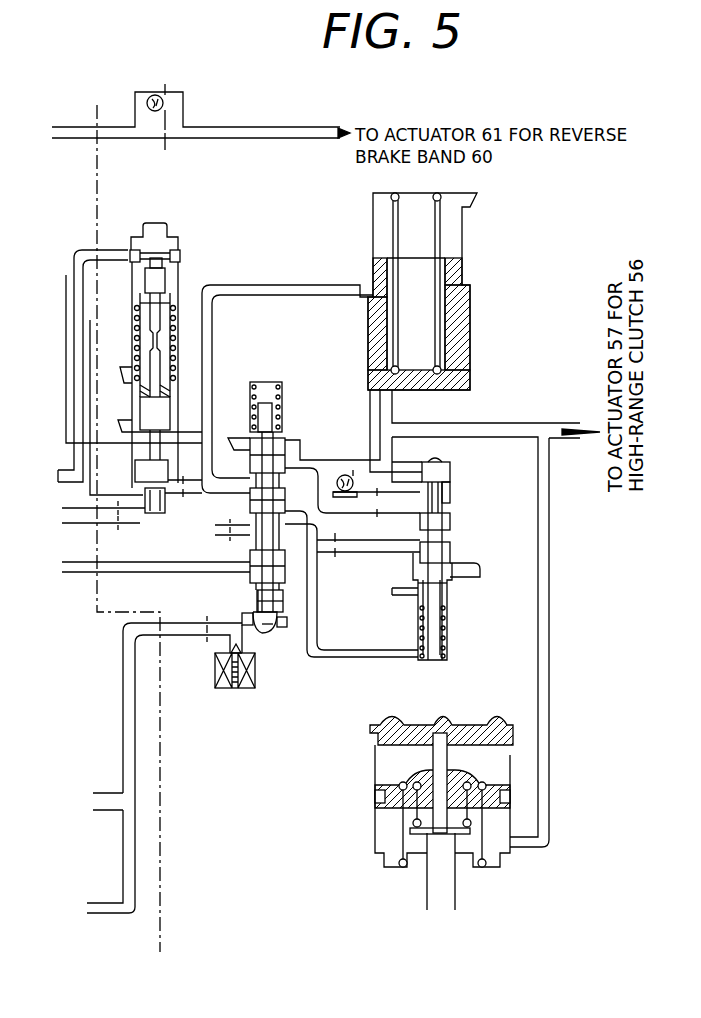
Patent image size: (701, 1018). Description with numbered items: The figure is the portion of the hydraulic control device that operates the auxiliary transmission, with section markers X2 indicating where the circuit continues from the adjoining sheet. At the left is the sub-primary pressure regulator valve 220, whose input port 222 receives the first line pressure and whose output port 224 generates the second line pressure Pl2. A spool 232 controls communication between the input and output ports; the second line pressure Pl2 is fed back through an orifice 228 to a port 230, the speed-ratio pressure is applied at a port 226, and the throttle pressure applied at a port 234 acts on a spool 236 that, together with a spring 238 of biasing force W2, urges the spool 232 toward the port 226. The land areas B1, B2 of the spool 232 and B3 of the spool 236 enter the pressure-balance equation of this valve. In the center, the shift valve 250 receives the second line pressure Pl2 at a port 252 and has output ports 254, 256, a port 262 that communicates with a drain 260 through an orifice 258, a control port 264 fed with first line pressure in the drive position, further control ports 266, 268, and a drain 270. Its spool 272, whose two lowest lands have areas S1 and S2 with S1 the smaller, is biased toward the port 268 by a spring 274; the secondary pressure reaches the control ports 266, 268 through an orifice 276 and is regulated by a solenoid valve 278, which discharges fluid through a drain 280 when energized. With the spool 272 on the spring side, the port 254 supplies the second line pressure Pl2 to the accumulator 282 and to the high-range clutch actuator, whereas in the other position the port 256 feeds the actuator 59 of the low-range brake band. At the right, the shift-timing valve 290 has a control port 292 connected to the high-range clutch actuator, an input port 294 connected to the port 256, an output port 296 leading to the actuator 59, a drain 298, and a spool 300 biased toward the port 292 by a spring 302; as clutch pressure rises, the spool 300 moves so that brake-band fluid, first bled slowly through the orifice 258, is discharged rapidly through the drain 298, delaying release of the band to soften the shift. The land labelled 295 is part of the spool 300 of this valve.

The actuator of the low-range brake band 59 is at (366, 824).
The sub-primary pressure regulator valve 220 is at (188, 248).
The input port 222 is at (135, 465).
The output port 224 is at (140, 442).
The port 226 is at (118, 523).
The orifice 228 is at (228, 528).
The port 230 is at (170, 497).
The spool 232 is at (146, 415).
The port 234 is at (137, 248).
The spool 236 is at (173, 308).
The spring 238 is at (150, 323).
The shift valve 250 is at (292, 436).
The port 252 is at (288, 487).
The output port 254 is at (285, 462).
The output port 256 is at (290, 508).
The orifice 258 is at (158, 614).
The drain 260 is at (240, 560).
The port 262 is at (232, 568).
The control port 264 is at (135, 640).
The control port 266 is at (283, 600).
The control port 268 is at (288, 622).
The drain 270 is at (233, 447).
The spool 272 is at (283, 415).
The spring 274 is at (268, 382).
The orifice 276 is at (202, 640).
The solenoid valve 278 is at (232, 702).
The drain 280 is at (258, 652).
The accumulator 282 is at (480, 317).
The shift-timing valve 290 is at (458, 518).
The control port 292 is at (410, 465).
The input port 294 is at (440, 522).
The spool land 295 is at (447, 583).
The output port 296 is at (466, 570).
The drain 298 is at (402, 592).
The spool 300 is at (444, 516).
The spring 302 is at (428, 648).
The cross sectional area of the lowermost land B1 is at (137, 512).
The cross sectional area of the land next to the lowermost land B2 is at (143, 497).
The cross sectional area of the throttle-pressure land B3 is at (150, 280).
The biasing force of the spring W2 is at (176, 332).
The second line pressure Pl2 is at (207, 358).
The cross sectional area of the lowermost land of the shift valve spool S1 is at (270, 636).
The cross sectional area of the second land of the shift valve spool S2 is at (276, 572).
The section line X2 is at (128, 536).